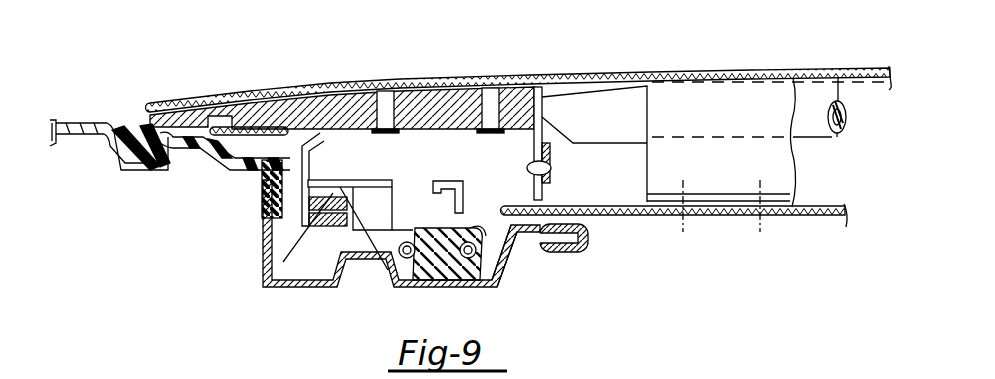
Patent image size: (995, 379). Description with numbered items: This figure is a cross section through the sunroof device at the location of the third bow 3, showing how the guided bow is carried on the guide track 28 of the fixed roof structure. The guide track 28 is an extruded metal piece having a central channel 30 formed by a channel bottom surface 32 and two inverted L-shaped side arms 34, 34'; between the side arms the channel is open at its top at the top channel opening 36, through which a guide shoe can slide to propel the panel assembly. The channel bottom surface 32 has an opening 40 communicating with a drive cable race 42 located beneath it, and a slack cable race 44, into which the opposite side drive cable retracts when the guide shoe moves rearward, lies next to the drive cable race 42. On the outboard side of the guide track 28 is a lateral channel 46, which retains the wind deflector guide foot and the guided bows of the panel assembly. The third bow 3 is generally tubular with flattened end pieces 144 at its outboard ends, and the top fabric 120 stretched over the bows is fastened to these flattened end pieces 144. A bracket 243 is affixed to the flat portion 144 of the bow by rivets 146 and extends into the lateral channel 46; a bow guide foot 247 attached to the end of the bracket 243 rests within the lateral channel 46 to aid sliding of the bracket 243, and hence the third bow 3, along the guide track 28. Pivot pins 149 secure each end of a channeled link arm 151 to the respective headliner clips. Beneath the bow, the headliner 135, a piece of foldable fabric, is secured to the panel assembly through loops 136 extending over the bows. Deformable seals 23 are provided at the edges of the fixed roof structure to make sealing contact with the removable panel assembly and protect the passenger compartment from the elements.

The third bow 3 is at (600, 97).
The deformable seals 23 is at (152, 172).
The guide track 28 is at (352, 230).
The central channel 30 is at (426, 218).
The channel bottom surface 32 is at (385, 235).
The side arm 34 is at (463, 183).
The side arm 34' is at (350, 189).
The top channel opening 36 is at (413, 190).
The opening 40 is at (487, 222).
The drive cable race 42 is at (393, 283).
The slack cable race 44 is at (478, 284).
The lateral channel 46 is at (318, 187).
The top fabric 120 is at (665, 78).
The headliner 135 is at (717, 214).
The loops 136 is at (780, 152).
The flattened end pieces 144 is at (446, 98).
The rivets 146 is at (388, 96).
The pivot pins 149 is at (555, 160).
The channeled link arm 151 is at (553, 175).
The bracket 243 is at (288, 170).
The bow guide foot 247 is at (270, 252).